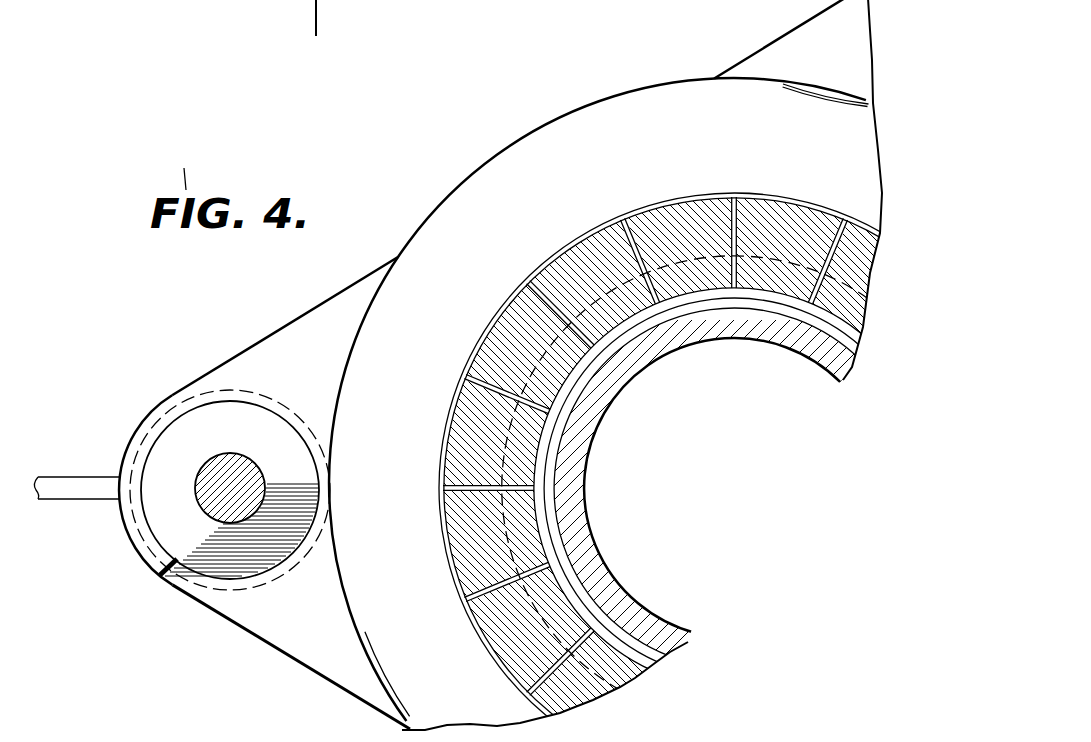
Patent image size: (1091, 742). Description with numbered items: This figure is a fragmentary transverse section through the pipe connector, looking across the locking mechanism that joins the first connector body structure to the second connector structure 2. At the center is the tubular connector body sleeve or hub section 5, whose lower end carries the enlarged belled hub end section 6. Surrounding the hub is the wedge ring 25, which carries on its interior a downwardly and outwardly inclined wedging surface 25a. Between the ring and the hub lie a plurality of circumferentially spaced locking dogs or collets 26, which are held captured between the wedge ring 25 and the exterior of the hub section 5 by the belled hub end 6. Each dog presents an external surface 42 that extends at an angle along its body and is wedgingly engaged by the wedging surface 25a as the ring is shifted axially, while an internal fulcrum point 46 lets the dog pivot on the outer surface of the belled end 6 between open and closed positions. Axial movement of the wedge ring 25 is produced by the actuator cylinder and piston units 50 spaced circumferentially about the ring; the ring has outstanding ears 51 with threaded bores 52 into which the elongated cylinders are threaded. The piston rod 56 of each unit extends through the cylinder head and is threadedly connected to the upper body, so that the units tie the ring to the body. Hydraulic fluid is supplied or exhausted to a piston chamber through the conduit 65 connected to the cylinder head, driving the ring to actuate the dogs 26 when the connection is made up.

The second connector structure 2 is at (333, 13).
The tubular connector body sleeve or hub section 5 is at (607, 596).
The enlarged belled hub end section 6 is at (468, 447).
The wedge ring 25 is at (667, 107).
The wedging surface 25a is at (470, 573).
The locking dogs or collets 26 is at (668, 222).
The external surface 42 is at (453, 527).
The fulcrum point 46 is at (560, 440).
The actuator cylinder and piston units 50 is at (165, 570).
The outstanding ears 51 is at (157, 407).
The threaded bores 52 is at (227, 590).
The piston rod 56 is at (238, 462).
The conduit 65 is at (78, 490).